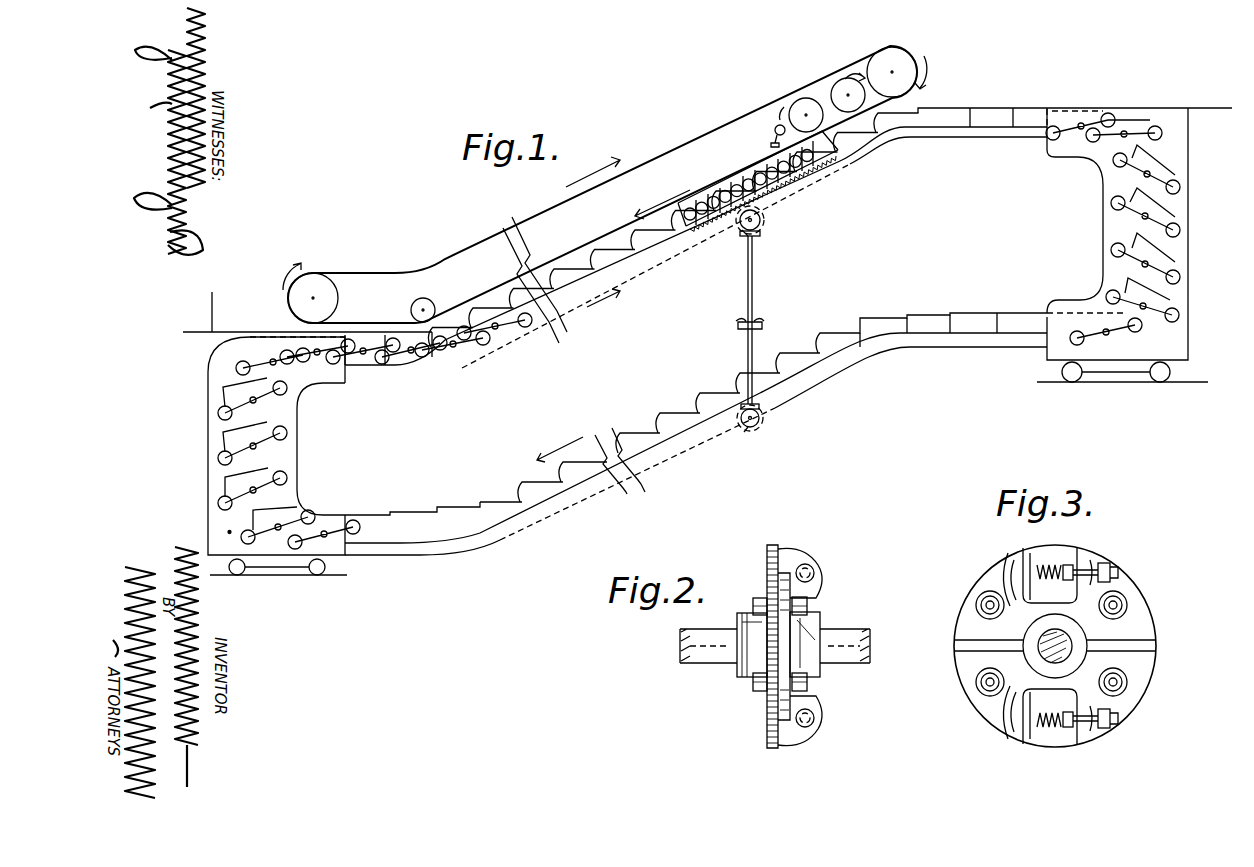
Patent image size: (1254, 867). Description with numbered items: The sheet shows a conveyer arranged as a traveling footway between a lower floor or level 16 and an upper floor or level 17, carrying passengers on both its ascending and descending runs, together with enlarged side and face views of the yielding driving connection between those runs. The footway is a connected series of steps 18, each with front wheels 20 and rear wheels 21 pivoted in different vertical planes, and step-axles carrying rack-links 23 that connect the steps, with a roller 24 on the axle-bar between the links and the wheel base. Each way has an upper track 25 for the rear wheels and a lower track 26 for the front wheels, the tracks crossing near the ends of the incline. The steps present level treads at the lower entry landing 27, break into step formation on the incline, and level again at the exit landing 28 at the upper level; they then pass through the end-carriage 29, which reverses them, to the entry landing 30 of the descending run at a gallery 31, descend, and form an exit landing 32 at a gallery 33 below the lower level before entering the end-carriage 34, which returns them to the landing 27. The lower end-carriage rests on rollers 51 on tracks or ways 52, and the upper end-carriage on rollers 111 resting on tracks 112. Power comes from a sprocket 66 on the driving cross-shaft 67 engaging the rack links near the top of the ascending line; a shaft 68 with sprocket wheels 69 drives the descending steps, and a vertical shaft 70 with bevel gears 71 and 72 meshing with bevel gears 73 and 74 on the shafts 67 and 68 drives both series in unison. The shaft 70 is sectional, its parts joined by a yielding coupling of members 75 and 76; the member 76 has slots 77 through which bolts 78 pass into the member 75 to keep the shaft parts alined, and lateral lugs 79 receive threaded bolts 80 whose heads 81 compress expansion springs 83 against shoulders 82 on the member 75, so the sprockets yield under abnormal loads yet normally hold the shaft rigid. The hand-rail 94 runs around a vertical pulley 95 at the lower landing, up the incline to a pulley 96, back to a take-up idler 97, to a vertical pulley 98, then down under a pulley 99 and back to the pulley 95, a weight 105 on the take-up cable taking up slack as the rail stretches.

In FIG. 1, the lower floor or level 16 is at (307, 302).
In FIG. 1, the upper floor or level 17 is at (1212, 108).
In FIG. 1, the steps 18 is at (602, 250).
In FIG. 1, the front wheels 20 is at (289, 434).
In FIG. 1, the rear wheels 21 is at (222, 457).
In FIG. 1, the links 23 is at (782, 180).
In FIG. 1, the roller 24 is at (249, 443).
In FIG. 1, the upper track 25 is at (393, 367).
In FIG. 1, the lower track 26 is at (415, 370).
In FIG. 1, the entry landing 27 is at (372, 326).
In FIG. 1, the exit landing 28 is at (992, 108).
In FIG. 1, the end-carriage 29 is at (1173, 147).
In FIG. 1, the entry landing 30 is at (987, 313).
In FIG. 1, the gallery 31 is at (940, 315).
In FIG. 1, the exit landing 32 is at (408, 512).
In FIG. 1, the gallery 33 is at (337, 449).
In FIG. 1, the end-carriage 34 is at (207, 372).
In FIG. 1, the rollers 51 is at (238, 576).
In FIG. 1, the tracks or ways 52 is at (284, 575).
In FIG. 1, the sprocket 66 is at (763, 216).
In FIG. 1, the driving cross-shaft 67 is at (760, 233).
In FIG. 1, the shaft 68 is at (761, 419).
In FIG. 1, the sprocket wheels 69 is at (763, 427).
In FIG. 1, the vertical shaft 70 is at (753, 300).
In FIG. 2, the vertical shaft 70 is at (853, 666).
In FIG. 1, the bevel gear 71 is at (746, 236).
In FIG. 1, the bevel gear 72 is at (741, 407).
In FIG. 1, the bevel gear 73 is at (742, 231).
In FIG. 1, the bevel gear 74 is at (750, 432).
In FIG. 2, the coupling member 75 is at (774, 575).
In FIG. 3, the coupling member 75 is at (1000, 567).
In FIG. 2, the coupling member 76 is at (812, 667).
In FIG. 3, the coupling member 76 is at (1142, 625).
In FIG. 2, the slots 77 is at (762, 698).
In FIG. 3, the slots 77 is at (1125, 605).
In FIG. 2, the bolts 78 is at (757, 598).
In FIG. 3, the bolts 78 is at (982, 605).
In FIG. 3, the lateral lugs 79 is at (1092, 565).
In FIG. 3, the threaded bolts 80 is at (1105, 570).
In FIG. 3, the heads 81 is at (1070, 566).
In FIG. 3, the shoulders 82 is at (1022, 560).
In FIG. 3, the expansion springs 83 is at (1050, 565).
In FIG. 1, the conveyor belt 94 is at (676, 195).
In FIG. 1, the vertical pulley 95 is at (313, 272).
In FIG. 1, the pulley 96 is at (896, 52).
In FIG. 1, the take-up idler 97 is at (804, 100).
In FIG. 1, the vertical pulley 98 is at (846, 78).
In FIG. 1, the pulley 99 is at (432, 302).
In FIG. 1, the weight 105 is at (771, 144).
In FIG. 1, the rollers 111 is at (1069, 380).
In FIG. 1, the tracks 112 is at (1094, 382).